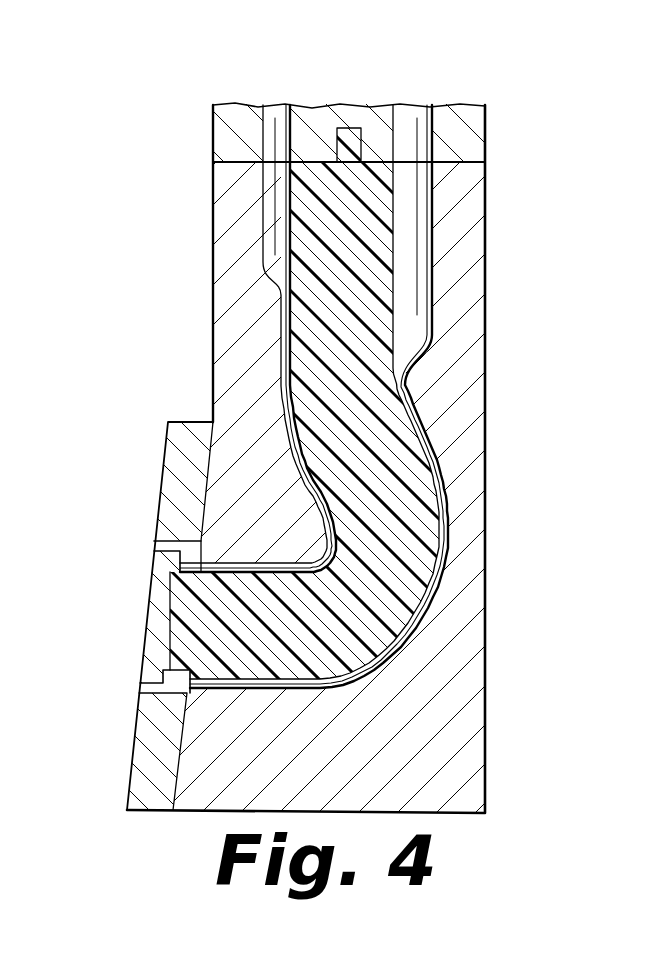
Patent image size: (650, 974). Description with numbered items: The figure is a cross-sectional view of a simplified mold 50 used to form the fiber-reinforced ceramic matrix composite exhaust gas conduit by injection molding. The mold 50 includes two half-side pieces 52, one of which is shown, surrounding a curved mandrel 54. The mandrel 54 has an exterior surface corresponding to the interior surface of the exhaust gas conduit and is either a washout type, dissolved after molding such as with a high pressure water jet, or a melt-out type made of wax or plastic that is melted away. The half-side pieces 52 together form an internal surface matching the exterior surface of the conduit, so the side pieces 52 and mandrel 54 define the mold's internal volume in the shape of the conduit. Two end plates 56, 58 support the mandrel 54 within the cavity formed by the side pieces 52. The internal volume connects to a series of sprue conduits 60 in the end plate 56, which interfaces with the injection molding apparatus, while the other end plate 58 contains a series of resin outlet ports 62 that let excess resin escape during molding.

The mold 50 is at (112, 274).
The half-side pieces 52 is at (487, 352).
The curved mandrel 54 is at (412, 590).
The end plate 56 is at (487, 133).
The end plate 58 is at (168, 448).
The sprue conduits 60 is at (274, 92).
The resin outlet ports 62 is at (140, 535).